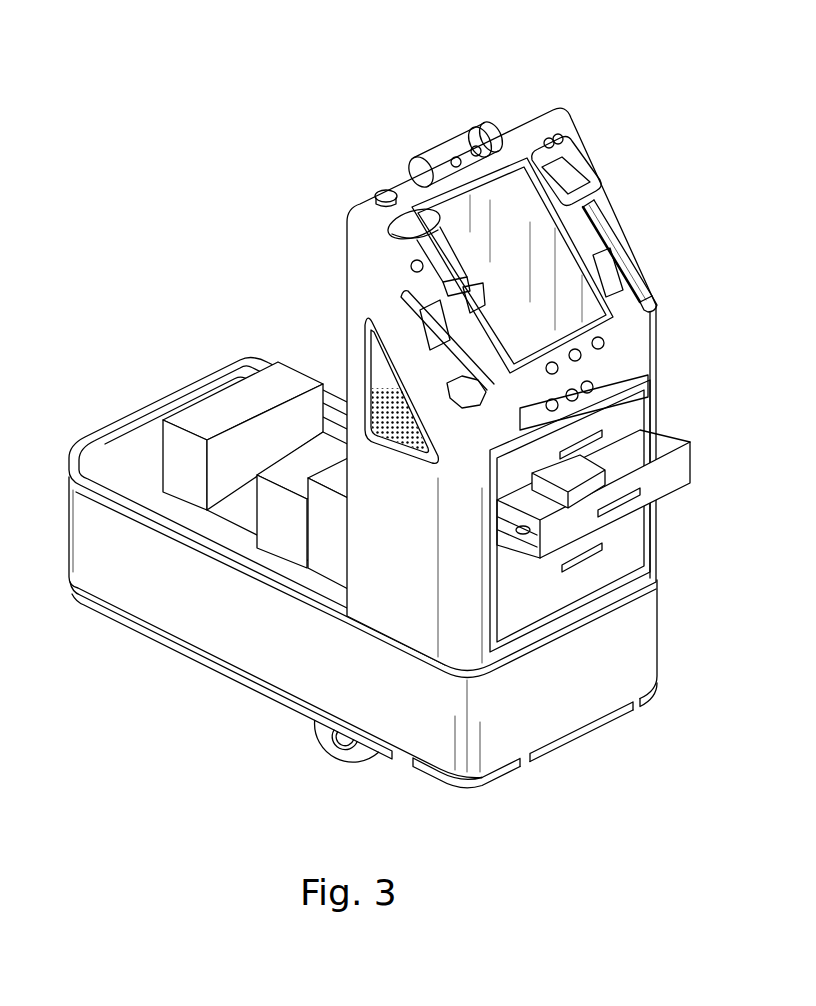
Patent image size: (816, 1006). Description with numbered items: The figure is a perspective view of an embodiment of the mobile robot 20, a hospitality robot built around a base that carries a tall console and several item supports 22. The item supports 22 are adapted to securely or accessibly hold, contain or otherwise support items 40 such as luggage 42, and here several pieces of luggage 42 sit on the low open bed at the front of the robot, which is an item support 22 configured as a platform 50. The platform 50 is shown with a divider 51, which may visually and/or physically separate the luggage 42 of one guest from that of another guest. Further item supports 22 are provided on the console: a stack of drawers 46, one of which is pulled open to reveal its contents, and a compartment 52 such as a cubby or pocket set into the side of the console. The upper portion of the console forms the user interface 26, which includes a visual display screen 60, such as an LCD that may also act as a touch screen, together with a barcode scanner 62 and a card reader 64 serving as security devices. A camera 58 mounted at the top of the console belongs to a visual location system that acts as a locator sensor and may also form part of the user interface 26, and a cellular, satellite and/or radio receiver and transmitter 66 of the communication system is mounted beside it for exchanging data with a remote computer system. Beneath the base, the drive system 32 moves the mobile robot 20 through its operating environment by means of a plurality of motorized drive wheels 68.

The mobile robot 20 is at (182, 107).
The item supports 22 is at (252, 511).
The user interface 26 is at (523, 150).
The drive system 32 is at (323, 752).
The items 40 is at (228, 378).
The luggage 42 is at (185, 492).
The drawer 46 is at (640, 407).
The platform 50 is at (118, 452).
The divider 51 is at (221, 525).
The compartment 52 is at (370, 325).
The camera 58 is at (445, 152).
The visual display screen 60 is at (540, 220).
The barcode scanner 62 is at (418, 242).
The card reader 64 is at (613, 260).
The receiver and transmitter 66 is at (385, 190).
The motorized drive wheels 68 is at (358, 760).